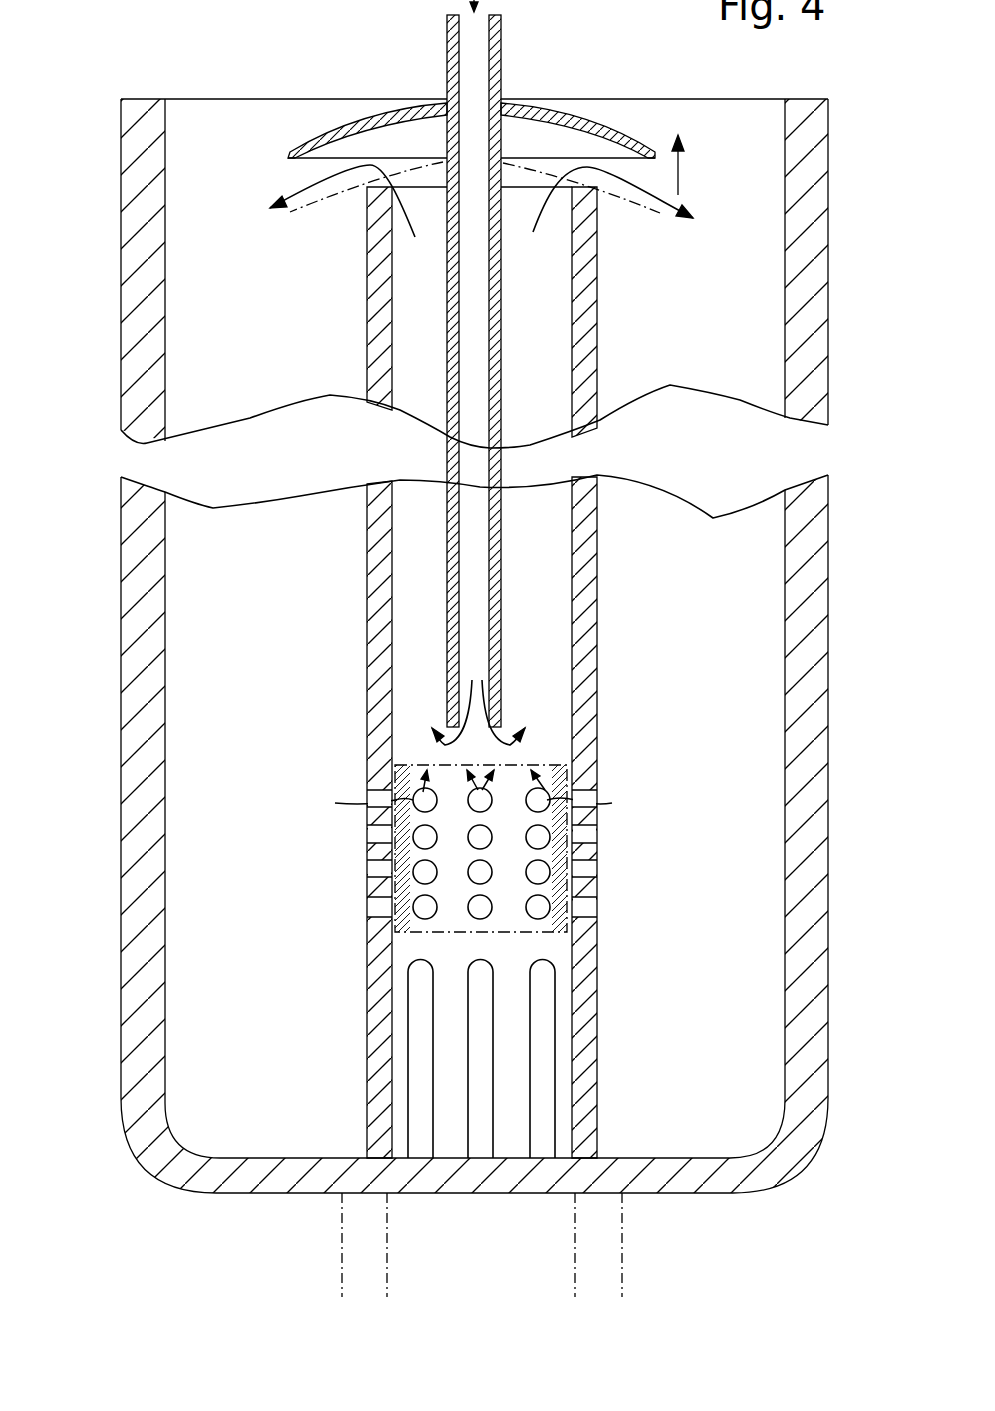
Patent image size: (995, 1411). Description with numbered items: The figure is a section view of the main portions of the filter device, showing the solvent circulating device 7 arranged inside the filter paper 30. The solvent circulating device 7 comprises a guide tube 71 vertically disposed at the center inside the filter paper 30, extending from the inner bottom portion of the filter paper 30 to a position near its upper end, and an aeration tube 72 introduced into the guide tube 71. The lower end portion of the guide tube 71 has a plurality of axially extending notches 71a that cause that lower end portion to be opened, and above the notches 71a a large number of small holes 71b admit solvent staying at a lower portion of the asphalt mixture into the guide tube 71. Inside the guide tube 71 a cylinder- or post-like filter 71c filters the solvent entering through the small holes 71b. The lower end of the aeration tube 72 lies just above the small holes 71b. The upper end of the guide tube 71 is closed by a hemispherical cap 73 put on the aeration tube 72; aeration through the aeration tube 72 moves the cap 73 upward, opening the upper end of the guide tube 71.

The filter paper 30 is at (137, 868).
The solvent circulating device 7 is at (600, 340).
The guide tube 71 is at (587, 563).
The aeration tube 72 is at (473, 643).
The hemispherical cap 73 is at (577, 118).
The notches 71a is at (540, 1060).
The small holes 71b is at (382, 837).
The filter 71c is at (563, 783).